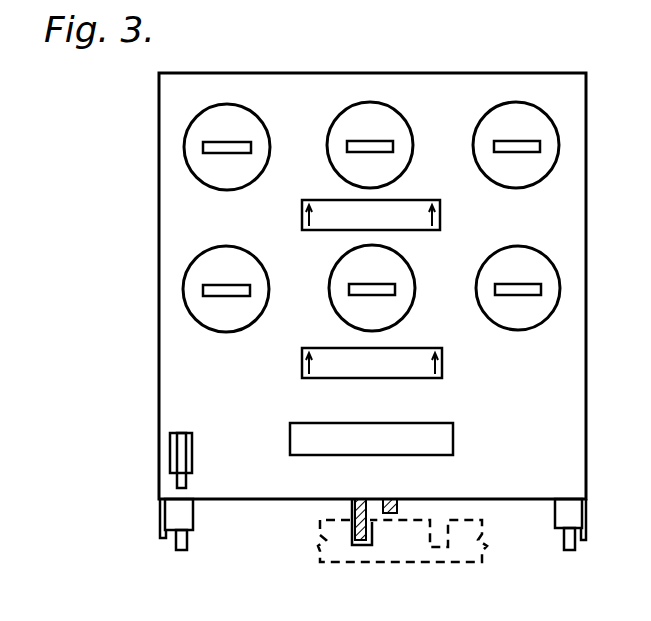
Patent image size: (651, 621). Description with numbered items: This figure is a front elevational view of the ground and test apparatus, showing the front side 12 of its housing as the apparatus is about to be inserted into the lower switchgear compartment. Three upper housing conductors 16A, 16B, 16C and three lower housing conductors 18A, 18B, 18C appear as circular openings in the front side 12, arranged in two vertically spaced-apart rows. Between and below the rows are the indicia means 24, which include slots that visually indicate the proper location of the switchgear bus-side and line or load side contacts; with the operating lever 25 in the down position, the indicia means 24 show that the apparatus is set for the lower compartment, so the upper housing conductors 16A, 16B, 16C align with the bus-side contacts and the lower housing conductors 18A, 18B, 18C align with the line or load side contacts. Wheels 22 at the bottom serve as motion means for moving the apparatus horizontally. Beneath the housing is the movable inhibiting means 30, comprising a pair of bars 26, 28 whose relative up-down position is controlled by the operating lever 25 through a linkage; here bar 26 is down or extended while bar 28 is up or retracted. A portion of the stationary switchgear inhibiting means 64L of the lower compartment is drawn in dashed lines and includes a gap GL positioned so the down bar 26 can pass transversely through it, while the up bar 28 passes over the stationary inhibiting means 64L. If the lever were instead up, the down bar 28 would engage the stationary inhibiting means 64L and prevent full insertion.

The front side 12 is at (160, 109).
The upper housing conductor 16A is at (222, 142).
The upper housing conductor 16B is at (365, 141).
The upper housing conductor 16C is at (511, 141).
The lower housing conductor 18A is at (222, 285).
The lower housing conductor 18B is at (368, 284).
The lower housing conductor 18C is at (514, 284).
The indicia means 24 is at (410, 216).
The operating lever 25 is at (172, 481).
The wheels 22 is at (187, 543).
The bar 26 is at (352, 500).
The bar 28 is at (401, 500).
The movable inhibiting means 30 is at (376, 511).
The stationary switchgear inhibiting means 64L is at (318, 547).
The gap GL is at (356, 561).